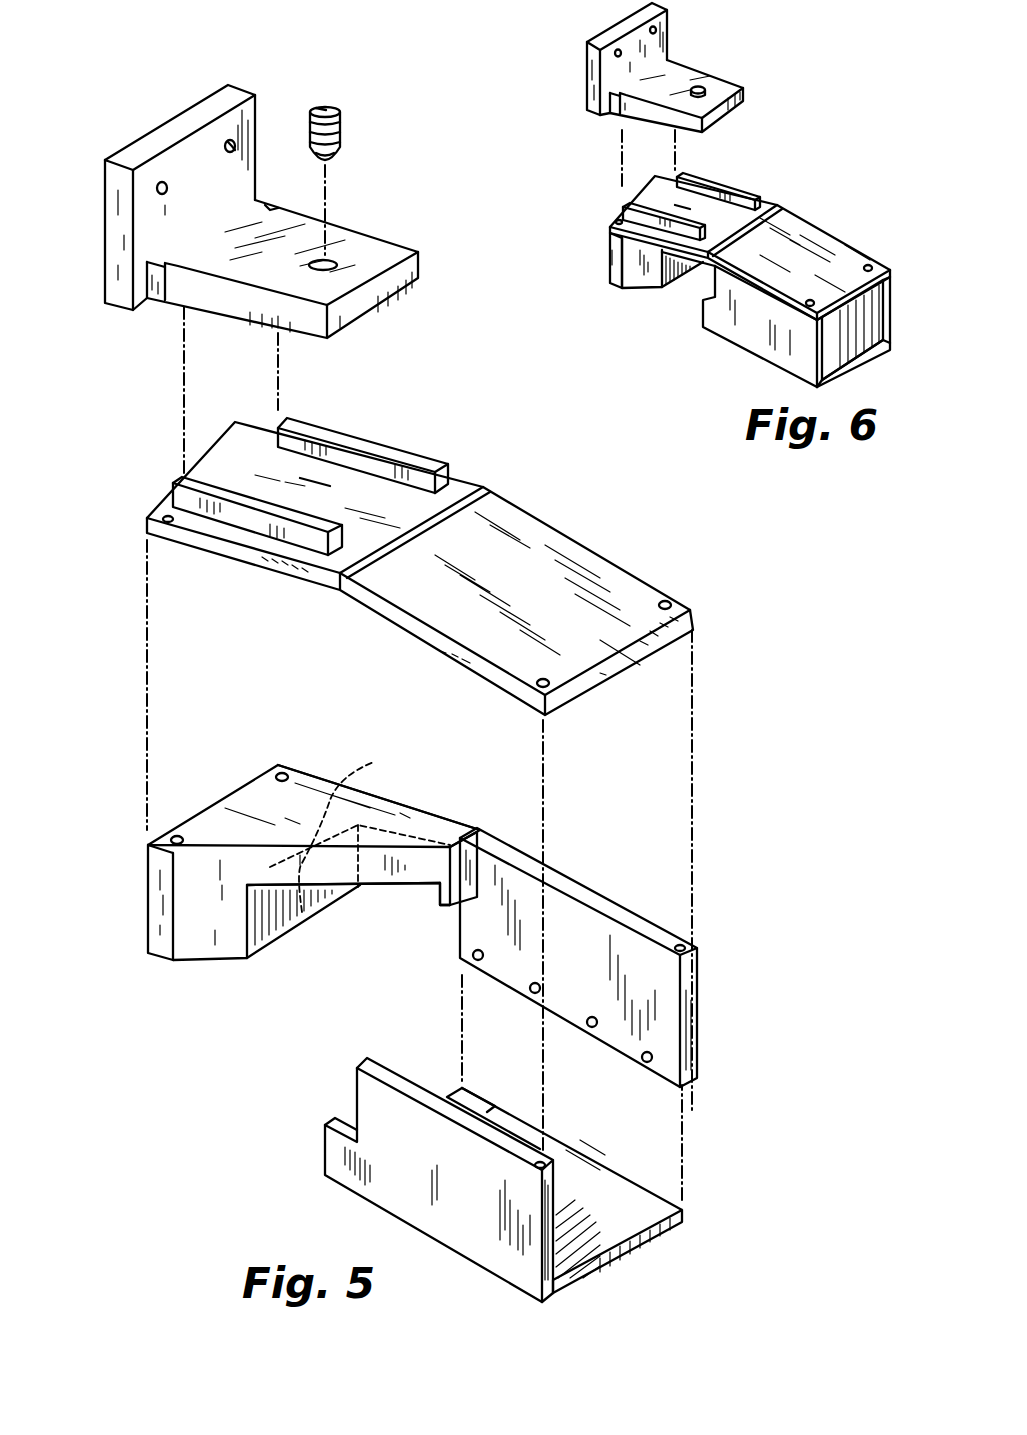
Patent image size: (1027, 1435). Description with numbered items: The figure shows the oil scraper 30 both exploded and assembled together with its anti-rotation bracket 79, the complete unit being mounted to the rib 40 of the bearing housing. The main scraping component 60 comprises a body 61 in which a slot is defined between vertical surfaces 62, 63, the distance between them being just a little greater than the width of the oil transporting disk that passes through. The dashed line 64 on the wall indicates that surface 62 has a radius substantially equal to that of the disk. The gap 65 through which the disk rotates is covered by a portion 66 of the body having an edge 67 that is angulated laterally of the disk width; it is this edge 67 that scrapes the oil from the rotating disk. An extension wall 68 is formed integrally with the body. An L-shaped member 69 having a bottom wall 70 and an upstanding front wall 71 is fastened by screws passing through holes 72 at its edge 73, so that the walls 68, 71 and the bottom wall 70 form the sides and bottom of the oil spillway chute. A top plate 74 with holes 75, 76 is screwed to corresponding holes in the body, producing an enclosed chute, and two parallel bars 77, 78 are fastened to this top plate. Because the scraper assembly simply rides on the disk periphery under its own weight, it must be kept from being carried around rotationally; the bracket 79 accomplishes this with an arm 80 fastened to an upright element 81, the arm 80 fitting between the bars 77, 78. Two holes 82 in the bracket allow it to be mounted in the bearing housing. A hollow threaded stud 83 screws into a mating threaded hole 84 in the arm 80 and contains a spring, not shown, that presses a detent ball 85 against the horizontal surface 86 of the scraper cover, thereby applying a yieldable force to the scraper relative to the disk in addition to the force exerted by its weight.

In FIG. 5, the scraper 30 is at (770, 795).
In FIG. 6, the scraper 30 is at (685, 318).
In FIG. 6, the rib 40 is at (720, 350).
In FIG. 5, the main scraping component 60 is at (220, 960).
In FIG. 6, the main scraping component 60 is at (628, 292).
In FIG. 5, the body 61 is at (248, 795).
In FIG. 5, the vertical surface 62 is at (268, 927).
In FIG. 5, the vertical surface 63 is at (432, 892).
In FIG. 5, the dashed line 64 is at (360, 828).
In FIG. 5, the gap 65 is at (402, 897).
In FIG. 5, the portion of the body 66 is at (403, 840).
In FIG. 5, the edge 67 is at (300, 886).
In FIG. 5, the extension wall 68 is at (600, 995).
In FIG. 6, the extension wall 68 is at (888, 293).
In FIG. 5, the L-shaped member 69 is at (640, 1255).
In FIG. 5, the bottom wall 70 is at (640, 1207).
In FIG. 6, the bottom wall 70 is at (840, 345).
In FIG. 5, the upstanding front wall 71 is at (503, 1222).
In FIG. 6, the upstanding front wall 71 is at (797, 340).
In FIG. 5, the holes 72 is at (642, 1058).
In FIG. 5, the edge 73 is at (605, 1160).
In FIG. 5, the top plate 74 is at (560, 547).
In FIG. 6, the top plate 74 is at (813, 230).
In FIG. 5, the hole 75 is at (160, 516).
In FIG. 5, the hole 76 is at (671, 601).
In FIG. 5, the parallel bar 77 is at (423, 462).
In FIG. 6, the parallel bar 77 is at (750, 197).
In FIG. 5, the parallel bar 78 is at (283, 510).
In FIG. 6, the parallel bar 78 is at (657, 210).
In FIG. 5, the bracket 79 is at (383, 197).
In FIG. 6, the bracket 79 is at (758, 88).
In FIG. 5, the arm 80 is at (380, 303).
In FIG. 6, the arm 80 is at (733, 113).
In FIG. 5, the upright element 81 is at (117, 220).
In FIG. 6, the upright element 81 is at (592, 80).
In FIG. 5, the holes 82 is at (231, 161).
In FIG. 6, the holes 82 is at (621, 54).
In FIG. 5, the threaded stud 83 is at (340, 123).
In FIG. 6, the threaded stud 83 is at (707, 88).
In FIG. 5, the threaded hole 84 is at (337, 262).
In FIG. 5, the detent ball 85 is at (333, 157).
In FIG. 5, the horizontal surface 86 is at (258, 463).
In FIG. 6, the horizontal surface 86 is at (700, 207).